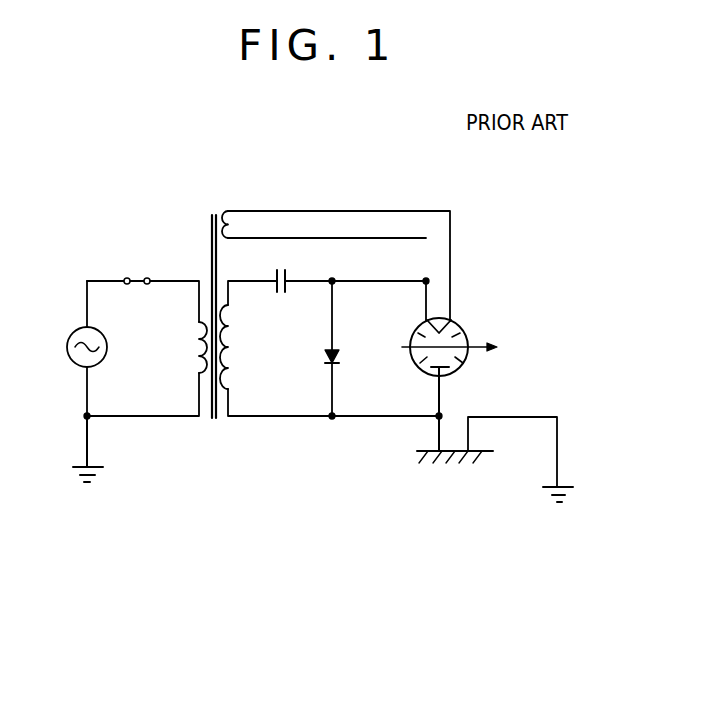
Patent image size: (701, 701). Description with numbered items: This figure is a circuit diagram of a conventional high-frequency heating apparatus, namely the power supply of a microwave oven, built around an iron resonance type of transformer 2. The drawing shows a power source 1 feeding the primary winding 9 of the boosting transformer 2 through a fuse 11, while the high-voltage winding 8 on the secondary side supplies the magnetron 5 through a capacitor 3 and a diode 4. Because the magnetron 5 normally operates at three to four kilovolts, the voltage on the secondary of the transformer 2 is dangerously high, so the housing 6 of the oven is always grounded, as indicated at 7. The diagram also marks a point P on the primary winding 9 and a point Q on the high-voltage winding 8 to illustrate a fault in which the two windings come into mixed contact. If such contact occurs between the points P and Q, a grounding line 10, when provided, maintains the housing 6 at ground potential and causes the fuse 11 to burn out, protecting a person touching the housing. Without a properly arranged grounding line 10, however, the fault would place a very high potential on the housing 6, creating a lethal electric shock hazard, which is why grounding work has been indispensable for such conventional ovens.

The AC power source 1 is at (67, 347).
The transformer 2 is at (213, 422).
The capacitor 3 is at (281, 294).
The diode 4 is at (341, 356).
The magnetron 5 is at (455, 321).
The housing 6 is at (430, 451).
The ground 7 is at (100, 466).
The high-voltage winding 8 is at (224, 364).
The primary winding 9 is at (197, 352).
The grounding line 10 is at (523, 417).
The fuse 11 is at (138, 278).
The point P is at (201, 325).
The point Q is at (225, 310).